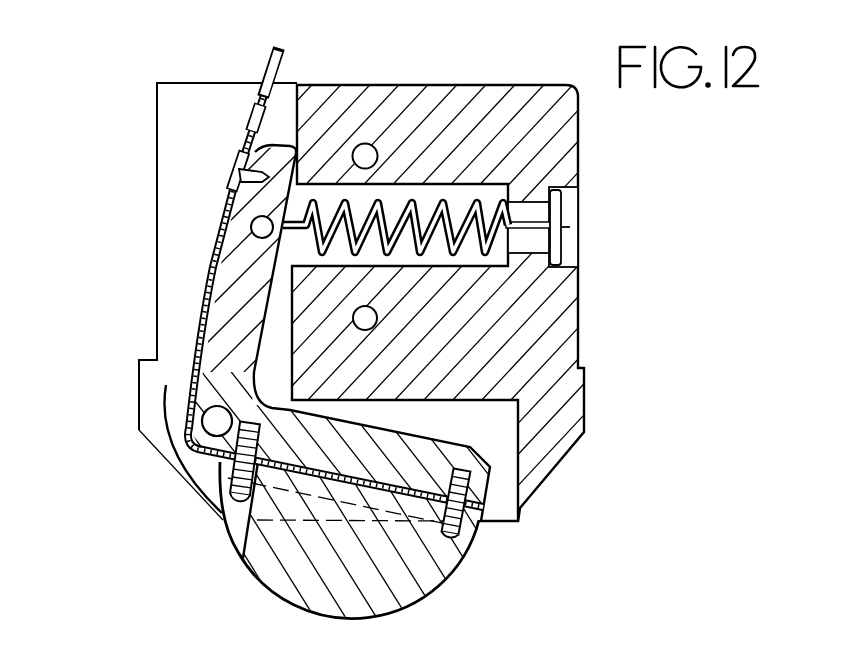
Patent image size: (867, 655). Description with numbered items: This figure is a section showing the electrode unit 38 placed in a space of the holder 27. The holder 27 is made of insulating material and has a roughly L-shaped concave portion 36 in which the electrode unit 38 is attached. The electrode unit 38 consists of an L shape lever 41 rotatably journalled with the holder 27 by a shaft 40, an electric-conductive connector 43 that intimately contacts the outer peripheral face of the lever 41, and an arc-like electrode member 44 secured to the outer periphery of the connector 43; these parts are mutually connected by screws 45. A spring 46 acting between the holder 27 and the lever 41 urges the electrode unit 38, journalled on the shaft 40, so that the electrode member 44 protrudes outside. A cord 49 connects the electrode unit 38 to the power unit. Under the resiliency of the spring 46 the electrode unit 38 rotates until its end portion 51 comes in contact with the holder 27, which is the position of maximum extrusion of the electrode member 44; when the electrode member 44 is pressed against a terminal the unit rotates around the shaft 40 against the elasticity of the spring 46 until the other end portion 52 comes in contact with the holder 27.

The holder 27 is at (494, 110).
The concave portion 36 is at (187, 267).
The electrode unit 38 is at (162, 391).
The shaft 40 is at (216, 424).
The L shape lever 41 is at (232, 322).
The electric-conductive connector 43 is at (218, 220).
The electrode member 44 is at (320, 607).
The screw 45 is at (225, 517).
The spring 46 is at (435, 203).
The cord 49 is at (264, 66).
The end portion 51 is at (293, 148).
The end portion 52 is at (467, 442).